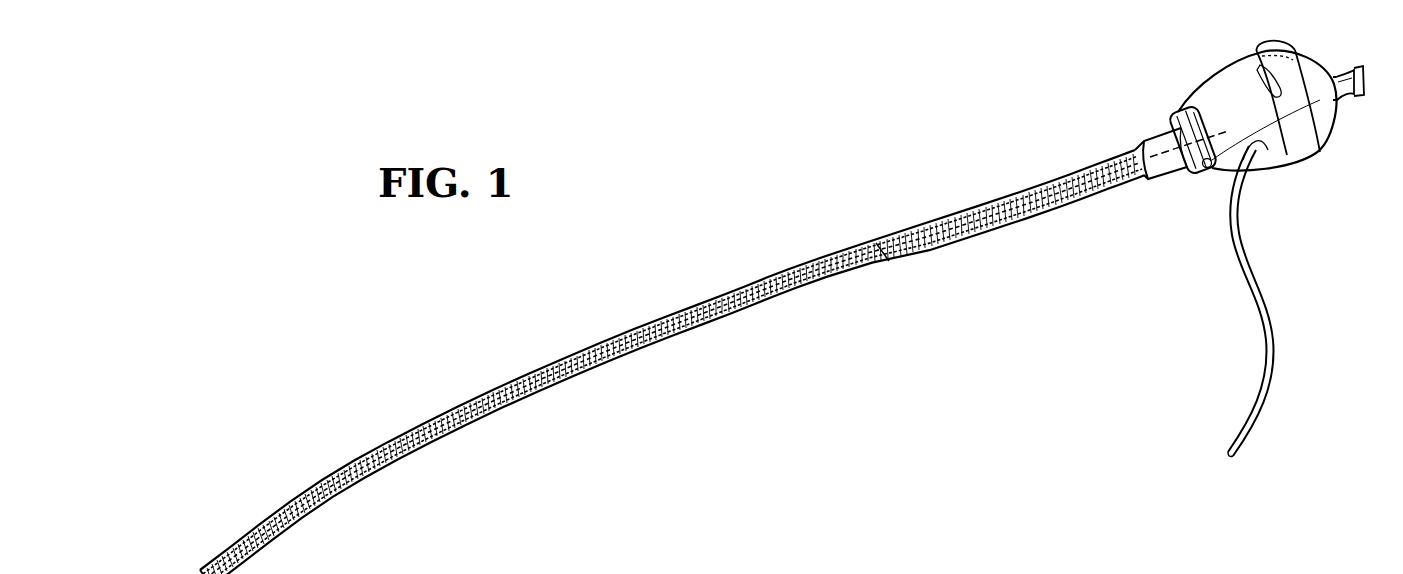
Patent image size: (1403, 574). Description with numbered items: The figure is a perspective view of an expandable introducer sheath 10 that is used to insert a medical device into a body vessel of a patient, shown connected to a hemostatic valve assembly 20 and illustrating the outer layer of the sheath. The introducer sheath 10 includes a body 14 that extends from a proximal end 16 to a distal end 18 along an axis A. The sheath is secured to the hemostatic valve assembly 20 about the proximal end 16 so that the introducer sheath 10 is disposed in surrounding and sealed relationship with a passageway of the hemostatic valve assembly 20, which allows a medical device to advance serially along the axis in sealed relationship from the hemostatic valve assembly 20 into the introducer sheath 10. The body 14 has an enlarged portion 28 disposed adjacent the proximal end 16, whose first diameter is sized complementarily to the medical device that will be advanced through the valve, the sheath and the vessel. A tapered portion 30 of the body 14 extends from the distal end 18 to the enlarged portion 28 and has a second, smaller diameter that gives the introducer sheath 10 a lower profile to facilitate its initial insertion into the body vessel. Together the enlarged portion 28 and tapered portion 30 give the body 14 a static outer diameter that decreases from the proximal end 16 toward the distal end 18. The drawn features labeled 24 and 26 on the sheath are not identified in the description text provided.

The expandable introducer sheath 10 is at (612, 236).
The body 14 is at (318, 478).
The proximal end 16 is at (1138, 148).
The distal end 18 is at (199, 571).
The hemostatic valve assembly 20 is at (1237, 80).
The braided layer 24 is at (722, 294).
The transition 26 is at (890, 258).
The enlarged portion 28 is at (985, 204).
The tapered portion 30 is at (456, 406).